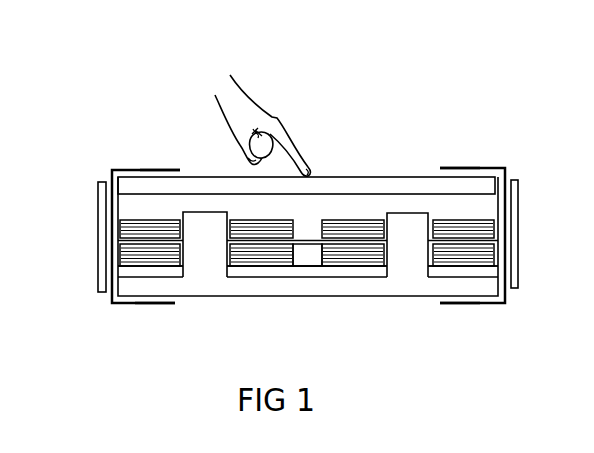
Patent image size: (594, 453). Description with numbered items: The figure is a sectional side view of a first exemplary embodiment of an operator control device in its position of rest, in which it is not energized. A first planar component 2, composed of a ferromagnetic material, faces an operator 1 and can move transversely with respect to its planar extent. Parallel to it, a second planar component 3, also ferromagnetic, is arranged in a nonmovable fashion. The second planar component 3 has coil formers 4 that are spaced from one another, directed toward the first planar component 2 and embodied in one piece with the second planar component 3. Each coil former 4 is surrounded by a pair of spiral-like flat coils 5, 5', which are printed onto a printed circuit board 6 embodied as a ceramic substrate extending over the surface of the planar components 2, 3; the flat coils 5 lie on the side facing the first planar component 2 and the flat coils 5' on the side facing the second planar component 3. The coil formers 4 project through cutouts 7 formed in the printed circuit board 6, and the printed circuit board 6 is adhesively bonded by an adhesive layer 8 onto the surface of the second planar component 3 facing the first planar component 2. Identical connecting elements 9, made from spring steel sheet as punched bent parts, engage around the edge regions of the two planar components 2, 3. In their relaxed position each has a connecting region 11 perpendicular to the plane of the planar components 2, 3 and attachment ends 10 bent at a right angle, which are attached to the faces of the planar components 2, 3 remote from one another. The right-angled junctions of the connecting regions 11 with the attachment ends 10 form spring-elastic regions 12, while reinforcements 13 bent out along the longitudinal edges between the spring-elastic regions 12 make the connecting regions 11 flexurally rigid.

The operator 1 is at (262, 90).
The first planar component 2 is at (357, 177).
The second planar component 3 is at (310, 288).
The coil former 4 is at (205, 222).
The flat coil 5 is at (273, 167).
The flat coil 5' is at (259, 306).
The printed circuit board 6 is at (307, 240).
The cutout 7 is at (182, 222).
The adhesive layer 8 is at (262, 272).
The connecting element 9 is at (96, 245).
The attachment end 10 is at (145, 168).
The connecting region 11 is at (125, 241).
The spring-elastic region 12 is at (110, 170).
The reinforcement 13 is at (125, 267).